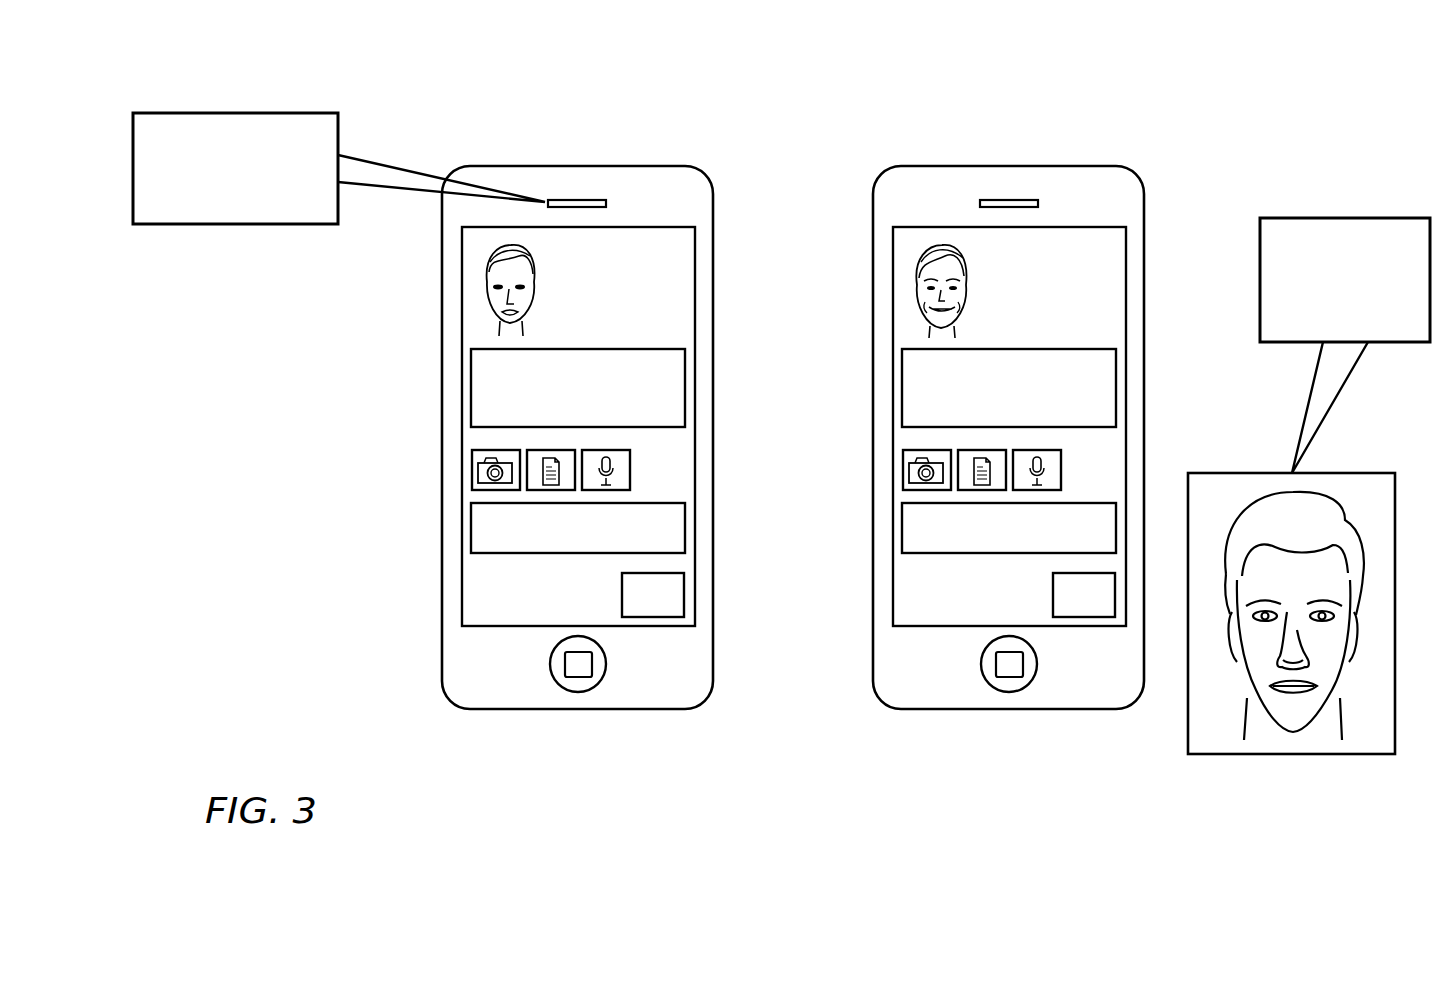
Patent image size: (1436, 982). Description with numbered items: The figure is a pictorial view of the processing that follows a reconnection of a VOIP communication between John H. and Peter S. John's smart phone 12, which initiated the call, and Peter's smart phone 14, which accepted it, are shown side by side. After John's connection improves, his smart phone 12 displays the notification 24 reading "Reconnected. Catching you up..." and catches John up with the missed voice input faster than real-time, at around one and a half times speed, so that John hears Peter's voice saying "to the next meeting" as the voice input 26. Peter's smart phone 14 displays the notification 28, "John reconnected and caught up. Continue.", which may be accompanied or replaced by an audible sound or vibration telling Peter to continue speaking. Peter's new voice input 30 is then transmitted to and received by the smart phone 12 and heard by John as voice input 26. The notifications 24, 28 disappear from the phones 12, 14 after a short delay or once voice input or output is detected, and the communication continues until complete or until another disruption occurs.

The smart phone 12 is at (648, 166).
The smart phone 14 is at (1041, 167).
The notification 24 is at (471, 385).
The voice input heard by John 26 is at (237, 112).
The notification 28 is at (902, 385).
The new voice input 30 is at (1313, 218).